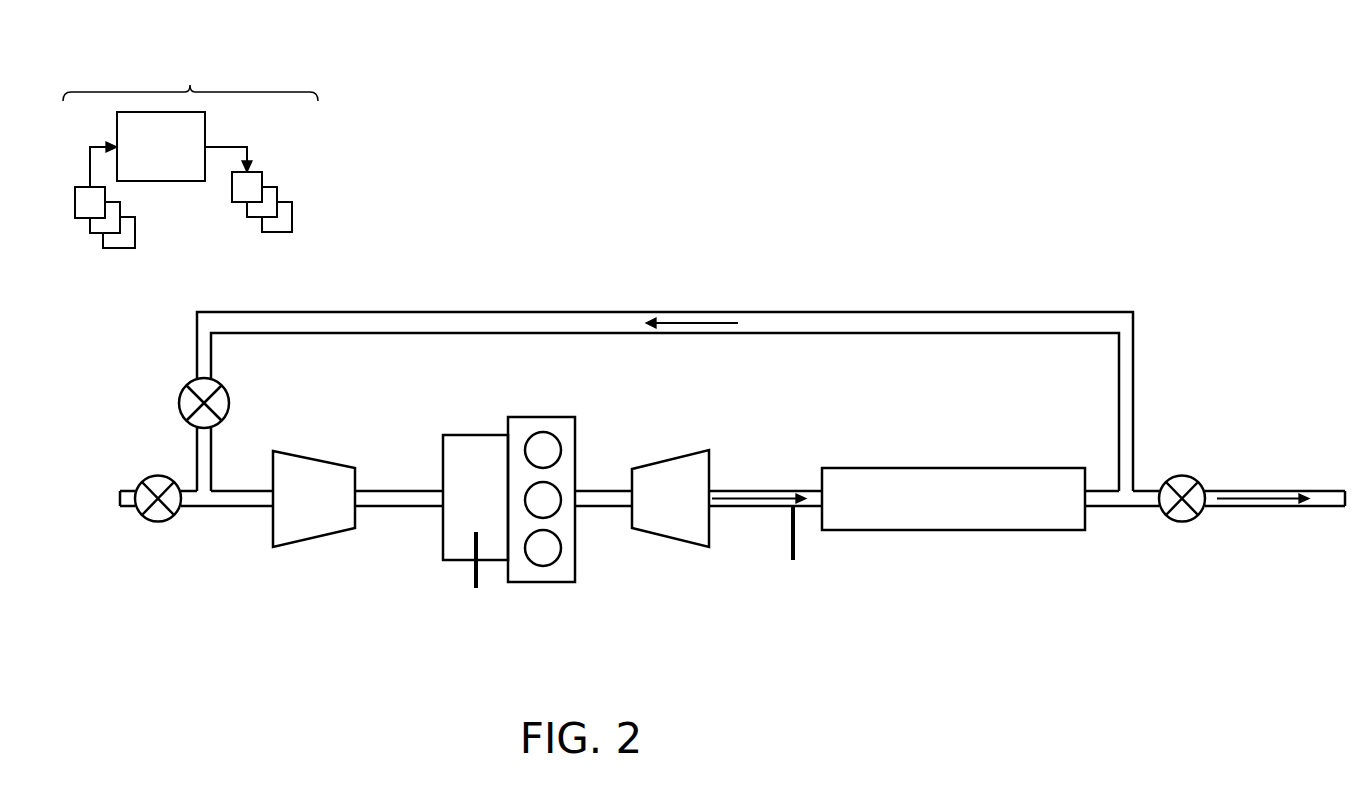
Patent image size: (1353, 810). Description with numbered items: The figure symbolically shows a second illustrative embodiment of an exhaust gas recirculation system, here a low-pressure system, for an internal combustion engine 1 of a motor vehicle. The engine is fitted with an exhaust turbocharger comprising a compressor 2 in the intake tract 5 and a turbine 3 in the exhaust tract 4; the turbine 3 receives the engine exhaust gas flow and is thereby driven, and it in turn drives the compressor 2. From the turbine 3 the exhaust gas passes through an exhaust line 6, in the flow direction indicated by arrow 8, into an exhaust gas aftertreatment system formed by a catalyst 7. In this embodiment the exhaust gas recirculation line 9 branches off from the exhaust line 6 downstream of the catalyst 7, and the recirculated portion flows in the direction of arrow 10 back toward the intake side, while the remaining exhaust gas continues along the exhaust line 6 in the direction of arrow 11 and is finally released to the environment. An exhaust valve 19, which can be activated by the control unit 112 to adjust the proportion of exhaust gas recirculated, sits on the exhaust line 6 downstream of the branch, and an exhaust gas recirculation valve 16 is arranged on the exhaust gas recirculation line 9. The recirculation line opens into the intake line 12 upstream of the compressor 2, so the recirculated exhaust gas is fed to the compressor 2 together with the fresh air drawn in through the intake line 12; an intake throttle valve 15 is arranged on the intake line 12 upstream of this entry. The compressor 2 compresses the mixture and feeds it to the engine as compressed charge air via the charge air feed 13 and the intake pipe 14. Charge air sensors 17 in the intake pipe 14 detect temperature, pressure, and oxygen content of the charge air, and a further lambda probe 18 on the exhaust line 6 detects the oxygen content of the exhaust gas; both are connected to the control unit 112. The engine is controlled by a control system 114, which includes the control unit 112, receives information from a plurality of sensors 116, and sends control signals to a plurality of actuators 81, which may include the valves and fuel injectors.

The internal combustion engine 1 is at (575, 555).
The compressor 2 is at (315, 540).
The turbine 3 is at (690, 540).
The exhaust tract 4 is at (795, 622).
The intake tract 5 is at (248, 620).
The exhaust line 6 is at (742, 506).
The catalyst 7 is at (955, 530).
The arrow 8 is at (750, 491).
The exhaust gas recirculation line 9 is at (790, 312).
The arrow 10 is at (688, 312).
The arrow 11 is at (1265, 491).
The intake line 12 is at (232, 506).
The charge air feed 13 is at (415, 506).
The intake pipe 14 is at (462, 560).
The intake throttle valve 15 is at (158, 521).
The exhaust gas recirculation valve 16 is at (181, 398).
The charge air sensors 17 is at (478, 585).
The further lambda probe 18 is at (795, 558).
The exhaust valve 19 is at (1177, 476).
The actuators 81 is at (220, 234).
The control unit 112 is at (161, 146).
The control system 114 is at (190, 174).
The sensors 116 is at (63, 252).